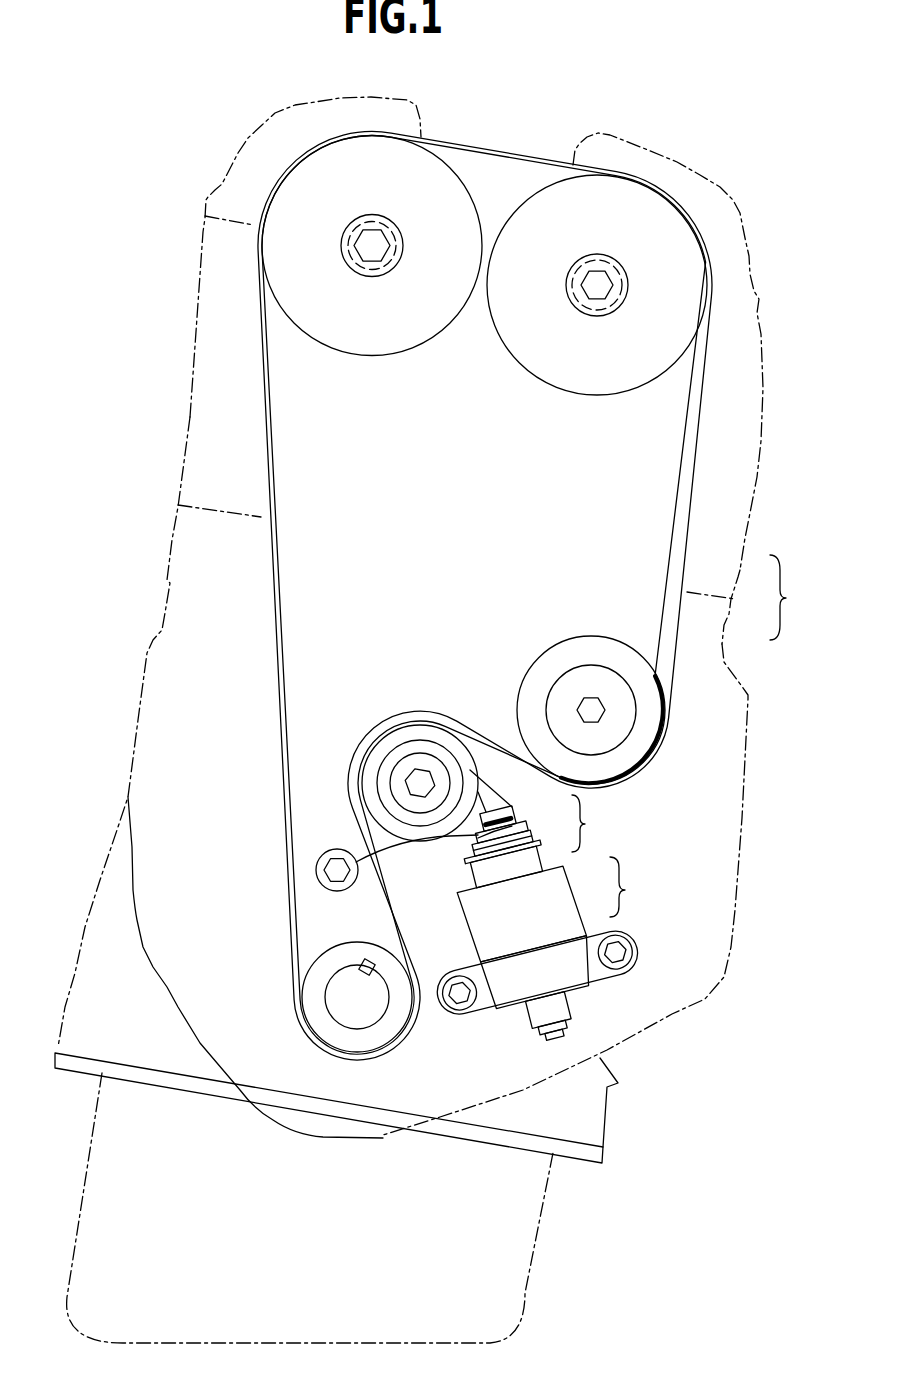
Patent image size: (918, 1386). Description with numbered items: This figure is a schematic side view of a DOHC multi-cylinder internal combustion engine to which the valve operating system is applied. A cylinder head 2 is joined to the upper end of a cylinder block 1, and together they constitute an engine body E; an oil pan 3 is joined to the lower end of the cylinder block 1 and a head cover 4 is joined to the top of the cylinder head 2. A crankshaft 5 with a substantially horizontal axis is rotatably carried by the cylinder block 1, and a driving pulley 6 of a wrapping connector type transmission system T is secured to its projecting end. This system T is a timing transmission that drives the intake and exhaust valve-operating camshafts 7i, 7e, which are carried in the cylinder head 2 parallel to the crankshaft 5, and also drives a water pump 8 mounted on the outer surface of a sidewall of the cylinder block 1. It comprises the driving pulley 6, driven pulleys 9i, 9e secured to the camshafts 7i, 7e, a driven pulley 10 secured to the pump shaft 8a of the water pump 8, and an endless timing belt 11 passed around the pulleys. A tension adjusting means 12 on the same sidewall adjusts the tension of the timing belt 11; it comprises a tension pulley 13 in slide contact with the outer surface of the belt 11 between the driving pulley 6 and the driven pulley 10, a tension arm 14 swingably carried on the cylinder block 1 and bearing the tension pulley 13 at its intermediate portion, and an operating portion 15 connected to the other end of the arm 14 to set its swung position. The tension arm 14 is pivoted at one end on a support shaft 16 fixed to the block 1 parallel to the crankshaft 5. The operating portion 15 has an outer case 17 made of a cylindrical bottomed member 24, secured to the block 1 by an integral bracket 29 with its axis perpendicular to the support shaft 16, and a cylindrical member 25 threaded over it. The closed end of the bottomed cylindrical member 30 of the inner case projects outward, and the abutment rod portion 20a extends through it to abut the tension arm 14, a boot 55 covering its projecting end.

The cylinder block 1 is at (724, 636).
The cylinder head 2 is at (738, 573).
The engine body E is at (786, 597).
The oil pan 3 is at (547, 1203).
The head cover 4 is at (749, 257).
The crankshaft 5 is at (363, 1011).
The driving pulley 6 is at (393, 1028).
The exhaust valve side valve-operating camshaft 7e is at (373, 266).
The intake valve side valve-operating camshaft 7i is at (576, 311).
The driven pulley 9e is at (388, 348).
The driven pulley 9i is at (581, 395).
The water pump 8 is at (594, 634).
The pump shaft 8a is at (594, 714).
The driven pulley 10 is at (536, 660).
The timing belt 11 is at (284, 566).
The wrapping connector type transmission system T is at (277, 707).
The tension adjusting means 12 is at (593, 823).
The tension pulley 13 is at (467, 797).
The tension arm 14 is at (498, 817).
The operating portion 15 is at (543, 864).
The support shaft 16 is at (328, 872).
The outer case 17 is at (546, 960).
The abutment rod portion 20a is at (473, 833).
The boot 55 is at (476, 845).
The bottomed cylindrical member 30 is at (495, 873).
The cylindrical member 25 is at (558, 882).
The cylindrical bottomed member 24 is at (572, 928).
The bracket 29 is at (598, 972).